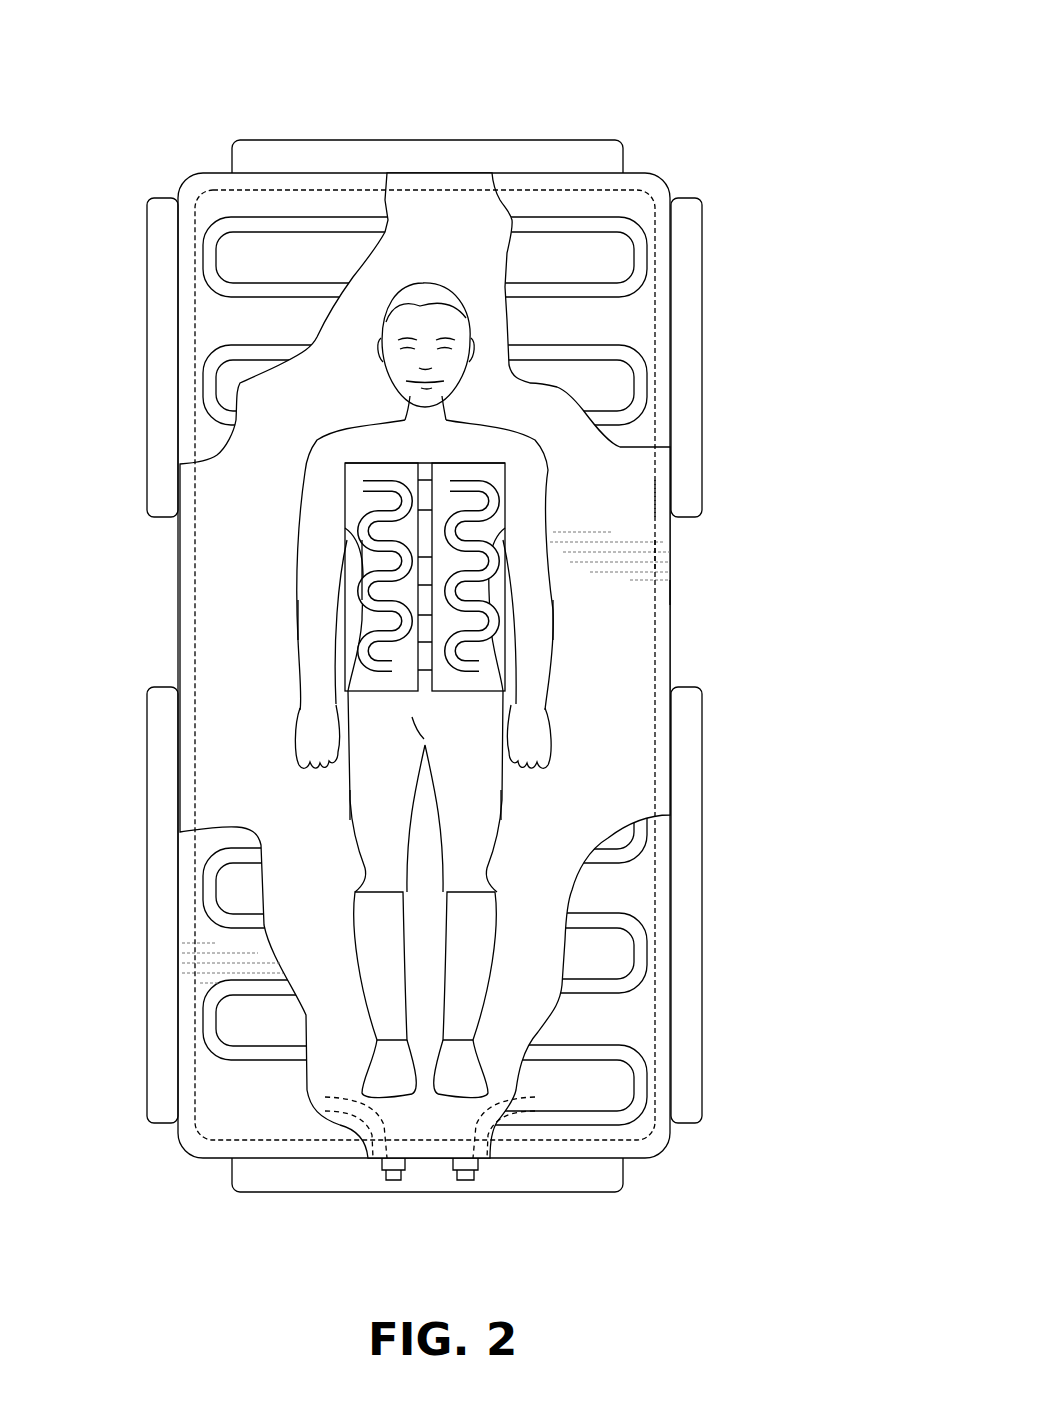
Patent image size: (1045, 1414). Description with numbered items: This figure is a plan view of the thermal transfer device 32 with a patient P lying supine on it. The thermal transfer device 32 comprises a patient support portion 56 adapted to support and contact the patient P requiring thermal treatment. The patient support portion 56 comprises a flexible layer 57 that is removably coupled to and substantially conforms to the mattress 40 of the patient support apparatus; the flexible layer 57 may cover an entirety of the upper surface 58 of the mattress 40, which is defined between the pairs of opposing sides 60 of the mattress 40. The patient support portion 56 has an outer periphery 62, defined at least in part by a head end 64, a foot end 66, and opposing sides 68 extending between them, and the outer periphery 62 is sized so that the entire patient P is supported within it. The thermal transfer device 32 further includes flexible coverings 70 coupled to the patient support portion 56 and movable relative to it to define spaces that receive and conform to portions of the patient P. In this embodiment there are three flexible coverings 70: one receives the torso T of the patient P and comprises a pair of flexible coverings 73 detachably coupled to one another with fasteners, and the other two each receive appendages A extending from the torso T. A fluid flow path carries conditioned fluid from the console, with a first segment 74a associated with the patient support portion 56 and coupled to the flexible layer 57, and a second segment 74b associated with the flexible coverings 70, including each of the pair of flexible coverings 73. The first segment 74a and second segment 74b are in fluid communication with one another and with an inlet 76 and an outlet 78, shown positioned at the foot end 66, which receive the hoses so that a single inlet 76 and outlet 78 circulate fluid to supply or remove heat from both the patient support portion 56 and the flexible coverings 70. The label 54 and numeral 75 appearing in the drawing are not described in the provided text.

The patient warming system 54 is at (435, 640).
The thermal transfer device 32 is at (634, 208).
The head end 64 is at (547, 173).
The foot end 66 is at (550, 1192).
The opposing sides 68 is at (178, 608).
The mattress 40 is at (637, 312).
The first segment 74a is at (615, 913).
The patient support portion 56 is at (657, 494).
The flexible layer 57 is at (635, 554).
The upper surface 58 is at (638, 512).
The opposing sides 60 is at (509, 190).
The outer periphery 62 is at (673, 592).
The flexible covering 70 is at (488, 454).
The pair of flexible coverings 73 is at (310, 482).
The right torso pad panel 75 is at (540, 461).
The second segment 74b is at (440, 472).
The inlet 76 is at (383, 1160).
The outlet 78 is at (475, 1181).
The patient P is at (424, 587).
The torso T is at (340, 548).
The appendages A is at (296, 623).